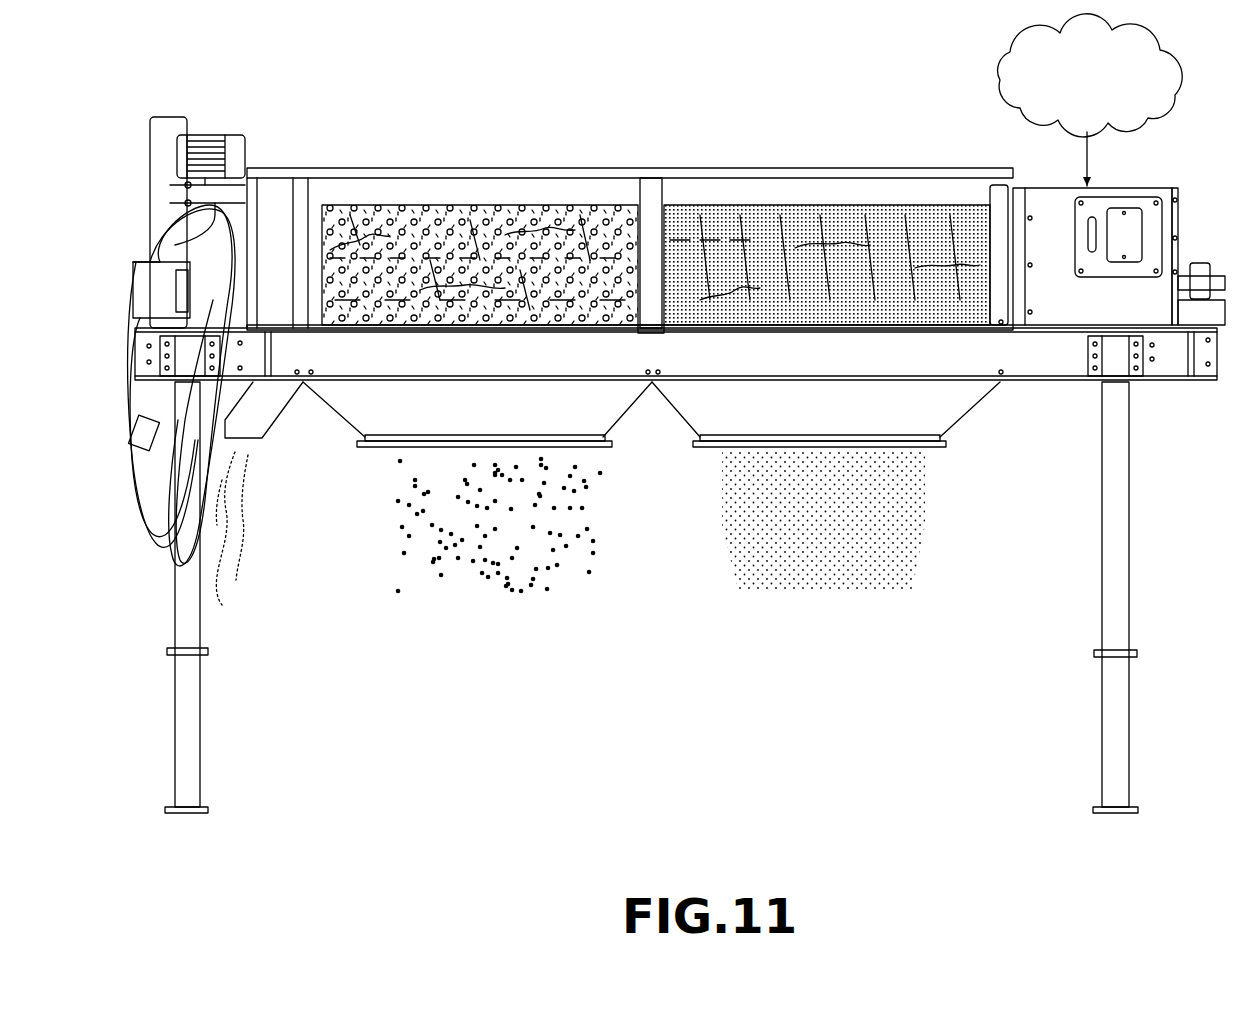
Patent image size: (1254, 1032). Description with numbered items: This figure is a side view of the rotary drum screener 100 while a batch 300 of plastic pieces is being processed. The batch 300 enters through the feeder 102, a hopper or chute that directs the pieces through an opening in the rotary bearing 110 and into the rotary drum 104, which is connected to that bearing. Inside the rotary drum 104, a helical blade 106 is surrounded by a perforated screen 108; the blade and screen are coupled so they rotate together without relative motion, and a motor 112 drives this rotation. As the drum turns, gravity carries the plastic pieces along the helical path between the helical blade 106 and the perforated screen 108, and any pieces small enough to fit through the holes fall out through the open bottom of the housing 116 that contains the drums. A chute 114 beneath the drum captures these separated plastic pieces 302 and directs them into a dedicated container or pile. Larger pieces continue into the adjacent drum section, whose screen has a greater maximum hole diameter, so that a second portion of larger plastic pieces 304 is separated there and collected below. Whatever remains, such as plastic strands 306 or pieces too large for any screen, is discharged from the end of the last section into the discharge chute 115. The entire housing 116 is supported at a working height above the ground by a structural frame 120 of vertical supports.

The rotary drum screener 100 is at (165, 78).
The motor 112 is at (207, 135).
The housing 116 is at (653, 168).
The rotary drum 104 is at (815, 203).
The perforated screen 108 is at (868, 207).
The helical blade 106 is at (945, 215).
The rotary bearing 110 is at (1010, 290).
The feeder 102 is at (1150, 188).
The batch of plastic pieces 300 is at (1104, 87).
The discharge chute 115 is at (255, 440).
The chute 114 is at (962, 420).
The larger plastic pieces 304 is at (568, 552).
The plastic pieces 302 is at (908, 520).
The plastic strands 306 is at (225, 556).
The structural frame 120 is at (175, 616).